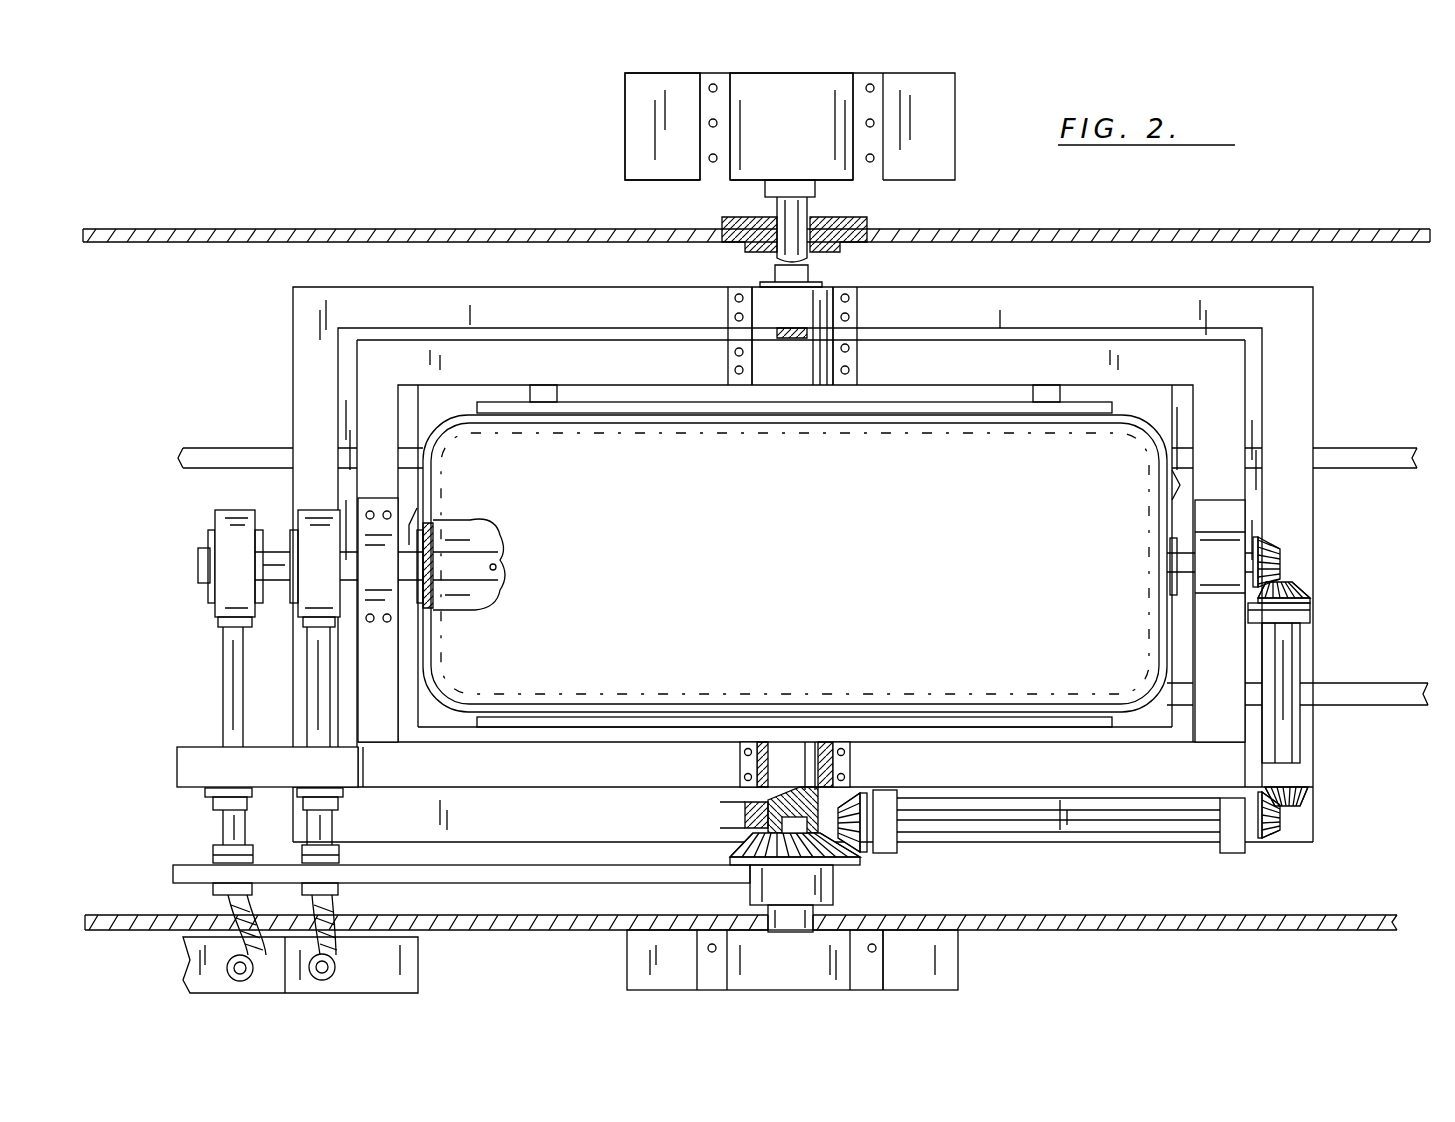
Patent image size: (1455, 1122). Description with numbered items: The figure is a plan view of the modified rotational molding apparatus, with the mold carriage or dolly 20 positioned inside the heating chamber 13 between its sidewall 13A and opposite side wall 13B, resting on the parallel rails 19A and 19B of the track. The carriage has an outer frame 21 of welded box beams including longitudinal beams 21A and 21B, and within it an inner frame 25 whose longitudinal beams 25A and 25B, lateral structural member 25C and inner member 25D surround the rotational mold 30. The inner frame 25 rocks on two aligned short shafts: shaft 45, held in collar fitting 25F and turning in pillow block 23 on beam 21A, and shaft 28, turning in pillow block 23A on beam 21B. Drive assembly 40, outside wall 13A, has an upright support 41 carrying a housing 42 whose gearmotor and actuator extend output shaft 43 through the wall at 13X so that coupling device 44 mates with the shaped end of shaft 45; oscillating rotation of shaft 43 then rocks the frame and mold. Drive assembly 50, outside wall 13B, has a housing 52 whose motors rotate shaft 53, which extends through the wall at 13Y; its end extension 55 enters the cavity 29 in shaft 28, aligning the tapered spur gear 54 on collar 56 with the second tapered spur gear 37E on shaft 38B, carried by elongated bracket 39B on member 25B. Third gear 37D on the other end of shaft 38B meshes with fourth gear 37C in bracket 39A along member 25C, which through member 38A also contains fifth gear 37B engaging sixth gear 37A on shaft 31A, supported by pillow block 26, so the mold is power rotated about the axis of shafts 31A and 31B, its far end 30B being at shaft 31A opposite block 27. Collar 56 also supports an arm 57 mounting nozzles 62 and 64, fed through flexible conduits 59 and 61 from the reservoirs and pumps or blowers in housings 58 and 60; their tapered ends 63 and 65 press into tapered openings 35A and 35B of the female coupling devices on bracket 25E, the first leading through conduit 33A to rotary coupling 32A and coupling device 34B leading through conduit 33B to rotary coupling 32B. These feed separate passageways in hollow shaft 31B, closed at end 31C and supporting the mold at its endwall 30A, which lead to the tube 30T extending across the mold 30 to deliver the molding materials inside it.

The heating chamber 13 is at (1240, 228).
The sidewall 13A is at (1085, 228).
The bushing in upper plate 13X is at (862, 224).
The side wall 13B is at (1167, 930).
The opening in lower plate 13Y is at (757, 922).
The drive assembly 40 is at (609, 106).
The upwardly extending support 41 is at (650, 158).
The housing 42 is at (802, 139).
The output shaft 43 is at (770, 205).
The coupling device 44 is at (830, 283).
The shaft 45 is at (788, 333).
The pillow block 23A is at (858, 318).
The collar fitting 25F is at (818, 367).
The mold carriage 20 is at (1166, 287).
The outer frame 21 is at (1265, 297).
The longitudinal beam 21A is at (1048, 295).
The longitudinal beam 21B is at (627, 836).
The inner frame 25 is at (1248, 357).
The longitudinal beam 25A is at (655, 365).
The longitudinal beam 25B is at (547, 782).
The lateral structural member 25C is at (1230, 407).
The tray of inner frame 25D is at (385, 675).
The bracket 25E is at (177, 767).
The rotational mold 30 is at (797, 584).
The endwall 30A is at (460, 595).
The tank bracket 30B is at (1178, 450).
The tube 30T is at (497, 552).
The shaft 31A is at (1170, 548).
The hollow shaft 31B is at (425, 510).
The closure end 31C is at (203, 560).
The first rotary coupling 32A is at (303, 523).
The second rotary coupling 32B is at (212, 518).
The conduit 33A is at (315, 653).
The outer support rod 33B is at (222, 653).
The pillow block 26 is at (1220, 621).
The left bearing block 27 is at (379, 620).
The rail 19A is at (1358, 448).
The rail 19B is at (1363, 683).
The sixth tapered spur gear 37A is at (1283, 562).
The fifth tapered spur gear 37B is at (1300, 592).
The fourth tapered spur gear 37C is at (1307, 800).
The third tapered spur gear 37D is at (1283, 823).
The second tapered spur gear 37E is at (865, 785).
The vertical shaft housing 38A is at (1305, 650).
The shaft 38B is at (1060, 832).
The bracket 39A is at (1305, 617).
The elongated bracket 39B is at (1233, 855).
The short shaft 28 is at (782, 762).
The pillow block 23 is at (750, 808).
The cavity 29 is at (752, 813).
The end extension 55 is at (753, 828).
The tapered spur gear 54 is at (850, 863).
The collar 56 is at (805, 896).
The shaft 53 is at (815, 915).
The housing 52 is at (805, 972).
The drive assembly 50 is at (972, 968).
The female coupling device 34B is at (205, 791).
The tapered opening 35A is at (343, 803).
The tapered opening 35B is at (213, 803).
The nozzle 62 is at (333, 828).
The tapered end 63 is at (307, 810).
The nozzle 64 is at (222, 828).
The tapered end 65 is at (250, 800).
The arm 57 is at (470, 880).
The flexible conduit 59 is at (340, 908).
The housing 60 is at (228, 967).
The flexible conduit 61 is at (222, 898).
The housing 58 is at (410, 957).